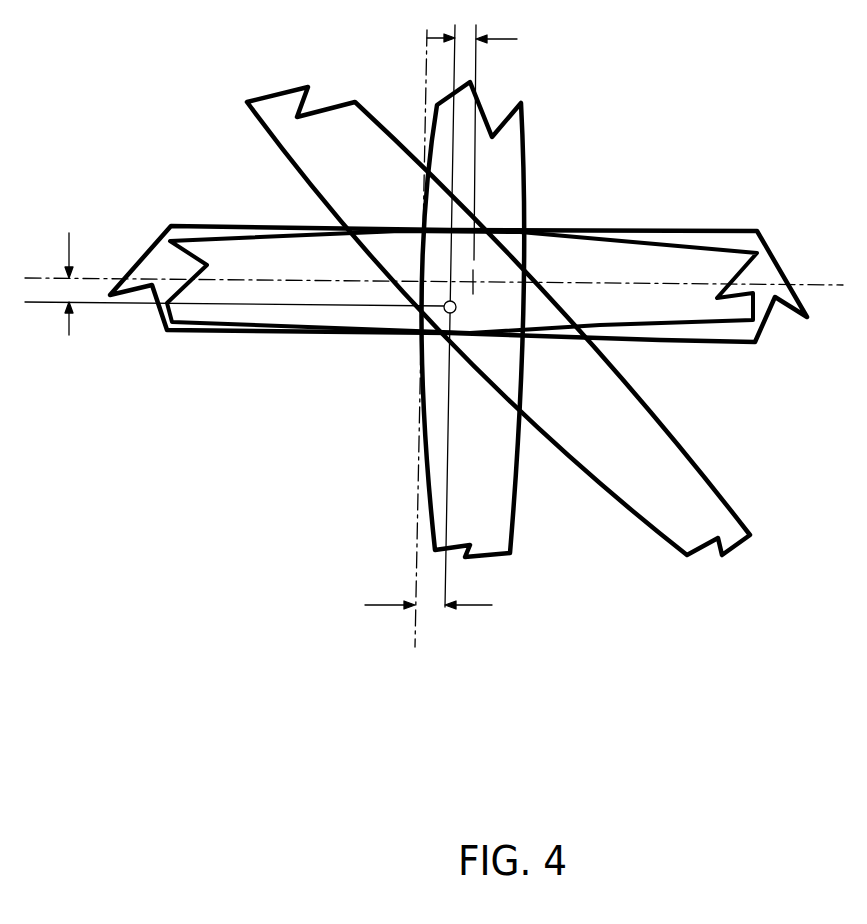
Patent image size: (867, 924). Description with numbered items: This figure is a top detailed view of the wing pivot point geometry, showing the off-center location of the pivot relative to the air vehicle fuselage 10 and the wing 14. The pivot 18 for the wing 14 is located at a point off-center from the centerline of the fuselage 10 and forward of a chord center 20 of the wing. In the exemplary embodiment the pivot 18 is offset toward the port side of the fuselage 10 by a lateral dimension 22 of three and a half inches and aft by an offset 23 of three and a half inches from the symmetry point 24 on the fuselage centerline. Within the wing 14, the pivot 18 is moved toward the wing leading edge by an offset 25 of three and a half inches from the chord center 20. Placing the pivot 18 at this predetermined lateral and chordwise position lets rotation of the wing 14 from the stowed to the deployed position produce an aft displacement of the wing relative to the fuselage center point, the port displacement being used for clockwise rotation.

The air vehicle fuselage 10 is at (670, 230).
The wing 14 is at (525, 157).
The symmetry point 24 is at (498, 321).
The pivot 18 is at (445, 313).
The chord center 20 is at (473, 283).
The lateral dimension 22 is at (70, 250).
The offset 23 is at (470, 605).
The offset 25 is at (497, 39).